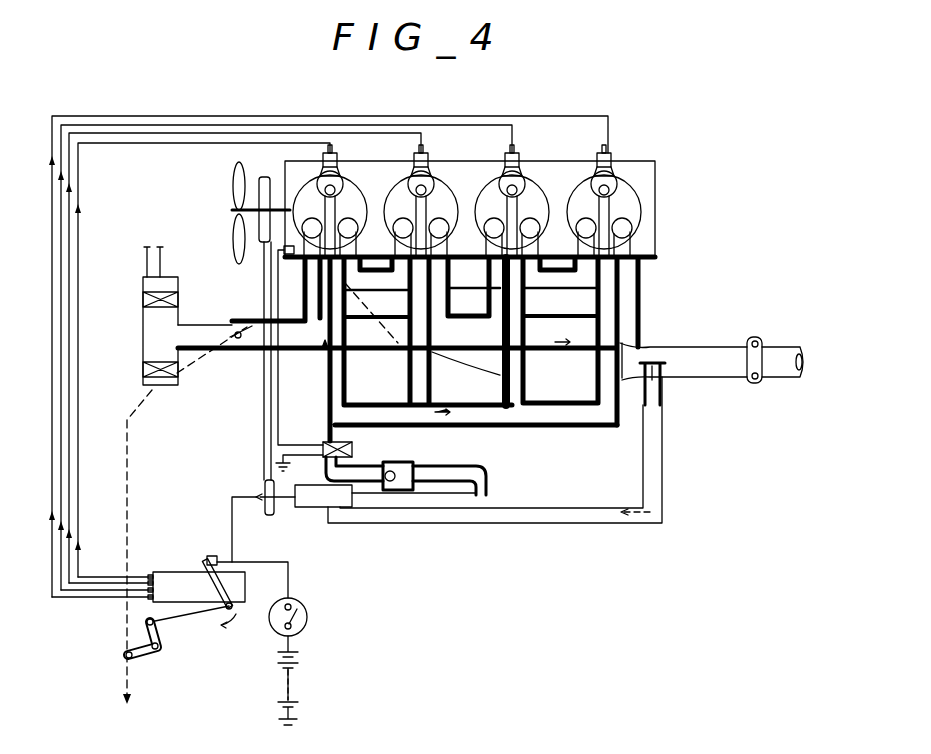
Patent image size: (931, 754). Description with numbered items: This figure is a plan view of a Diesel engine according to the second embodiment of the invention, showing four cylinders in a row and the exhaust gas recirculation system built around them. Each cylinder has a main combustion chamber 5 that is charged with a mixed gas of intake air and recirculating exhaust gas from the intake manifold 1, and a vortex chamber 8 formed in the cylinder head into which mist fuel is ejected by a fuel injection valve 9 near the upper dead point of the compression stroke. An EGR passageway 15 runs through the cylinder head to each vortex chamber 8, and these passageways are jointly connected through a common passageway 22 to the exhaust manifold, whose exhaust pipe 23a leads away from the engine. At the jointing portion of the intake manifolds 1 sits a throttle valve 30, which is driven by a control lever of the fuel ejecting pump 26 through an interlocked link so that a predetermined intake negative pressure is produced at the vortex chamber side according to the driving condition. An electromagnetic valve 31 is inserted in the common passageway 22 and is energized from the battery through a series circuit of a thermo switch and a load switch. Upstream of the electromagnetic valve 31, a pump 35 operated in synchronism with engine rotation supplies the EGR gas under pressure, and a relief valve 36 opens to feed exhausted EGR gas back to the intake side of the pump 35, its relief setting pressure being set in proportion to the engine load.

The intake manifold 1 is at (370, 337).
The main combustion chamber 5 is at (402, 197).
The vortex chamber 8 is at (425, 170).
The fuel injection valve 9 is at (421, 152).
The EGR passageway 15 is at (530, 380).
The common passageway 22 is at (524, 523).
The exhaust pipe 23a is at (710, 362).
The fuel ejecting pump 26 is at (173, 582).
The throttle valve 30 is at (240, 340).
The electromagnetic valve 31 is at (352, 450).
The pump 35 is at (320, 507).
The relief valve 36 is at (413, 492).